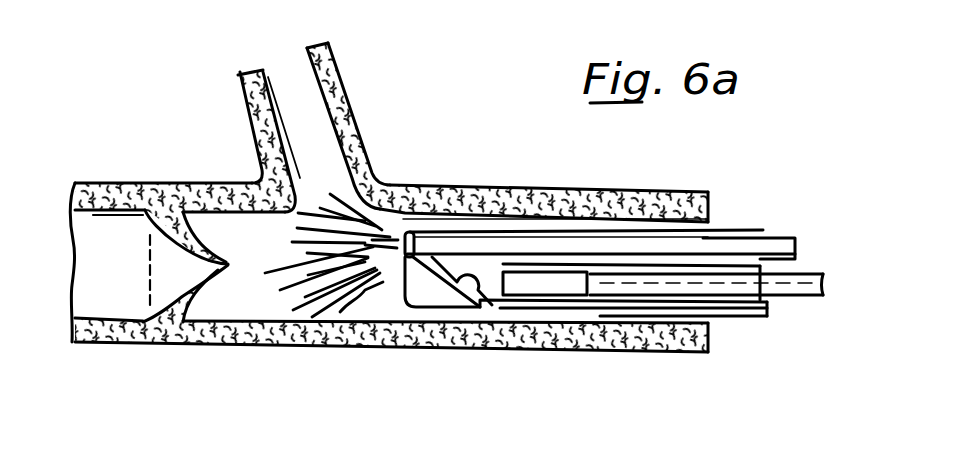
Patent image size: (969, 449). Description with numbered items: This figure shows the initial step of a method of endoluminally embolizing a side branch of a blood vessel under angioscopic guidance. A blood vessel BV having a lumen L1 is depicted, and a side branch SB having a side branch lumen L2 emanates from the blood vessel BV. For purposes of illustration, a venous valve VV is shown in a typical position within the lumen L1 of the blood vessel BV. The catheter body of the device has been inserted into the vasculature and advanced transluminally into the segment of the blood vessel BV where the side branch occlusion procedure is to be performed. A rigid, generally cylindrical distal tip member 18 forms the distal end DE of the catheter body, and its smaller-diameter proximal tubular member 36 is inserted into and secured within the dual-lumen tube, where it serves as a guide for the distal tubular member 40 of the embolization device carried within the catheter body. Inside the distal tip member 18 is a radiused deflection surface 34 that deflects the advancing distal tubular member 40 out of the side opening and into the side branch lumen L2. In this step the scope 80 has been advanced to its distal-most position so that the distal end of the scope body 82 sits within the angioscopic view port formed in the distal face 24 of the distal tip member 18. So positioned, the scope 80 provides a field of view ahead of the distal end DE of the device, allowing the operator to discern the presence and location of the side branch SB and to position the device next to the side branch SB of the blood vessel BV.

The blood vessel BV is at (673, 192).
The side branch SB is at (354, 132).
The lumen L1 is at (92, 272).
The side branch lumen L2 is at (293, 65).
The venous valve VV is at (196, 283).
The distal face 24 is at (407, 258).
The distal end DE is at (427, 316).
The deflection surface 34 is at (478, 287).
The scope body 82 is at (487, 243).
The proximal tubular member 36 is at (533, 262).
The distal tip member 18 is at (537, 296).
The scope 80 is at (798, 232).
The distal tubular member 40 is at (817, 272).